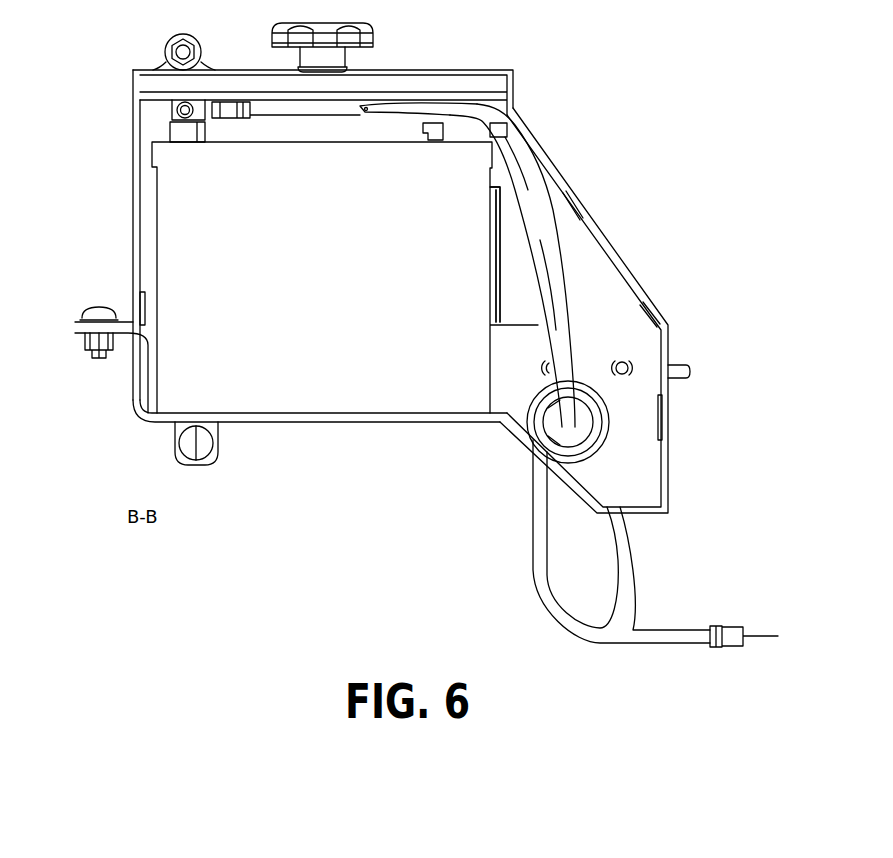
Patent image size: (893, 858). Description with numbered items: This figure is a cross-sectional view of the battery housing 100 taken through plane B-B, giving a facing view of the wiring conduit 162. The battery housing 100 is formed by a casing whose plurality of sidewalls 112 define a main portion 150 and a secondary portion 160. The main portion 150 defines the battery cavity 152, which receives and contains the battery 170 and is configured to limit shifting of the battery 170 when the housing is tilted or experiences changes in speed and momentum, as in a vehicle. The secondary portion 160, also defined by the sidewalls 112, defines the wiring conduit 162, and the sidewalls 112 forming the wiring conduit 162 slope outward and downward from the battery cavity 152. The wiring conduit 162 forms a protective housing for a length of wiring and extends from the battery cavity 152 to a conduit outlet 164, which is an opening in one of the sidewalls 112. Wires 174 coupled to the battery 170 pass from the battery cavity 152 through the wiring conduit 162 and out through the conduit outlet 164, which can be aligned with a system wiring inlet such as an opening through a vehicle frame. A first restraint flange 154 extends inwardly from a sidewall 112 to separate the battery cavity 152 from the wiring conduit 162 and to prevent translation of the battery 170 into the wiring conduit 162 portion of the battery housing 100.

The battery housing 100 is at (102, 97).
The main portion 150 is at (105, 170).
The battery cavity 152 is at (140, 252).
The sidewalls 112 is at (147, 307).
The battery 170 is at (333, 170).
The first restraint flange 154 is at (497, 237).
The wires 174 is at (537, 207).
The secondary portion 160 is at (657, 280).
The wiring conduit 162 is at (577, 283).
The conduit outlet 164 is at (587, 423).